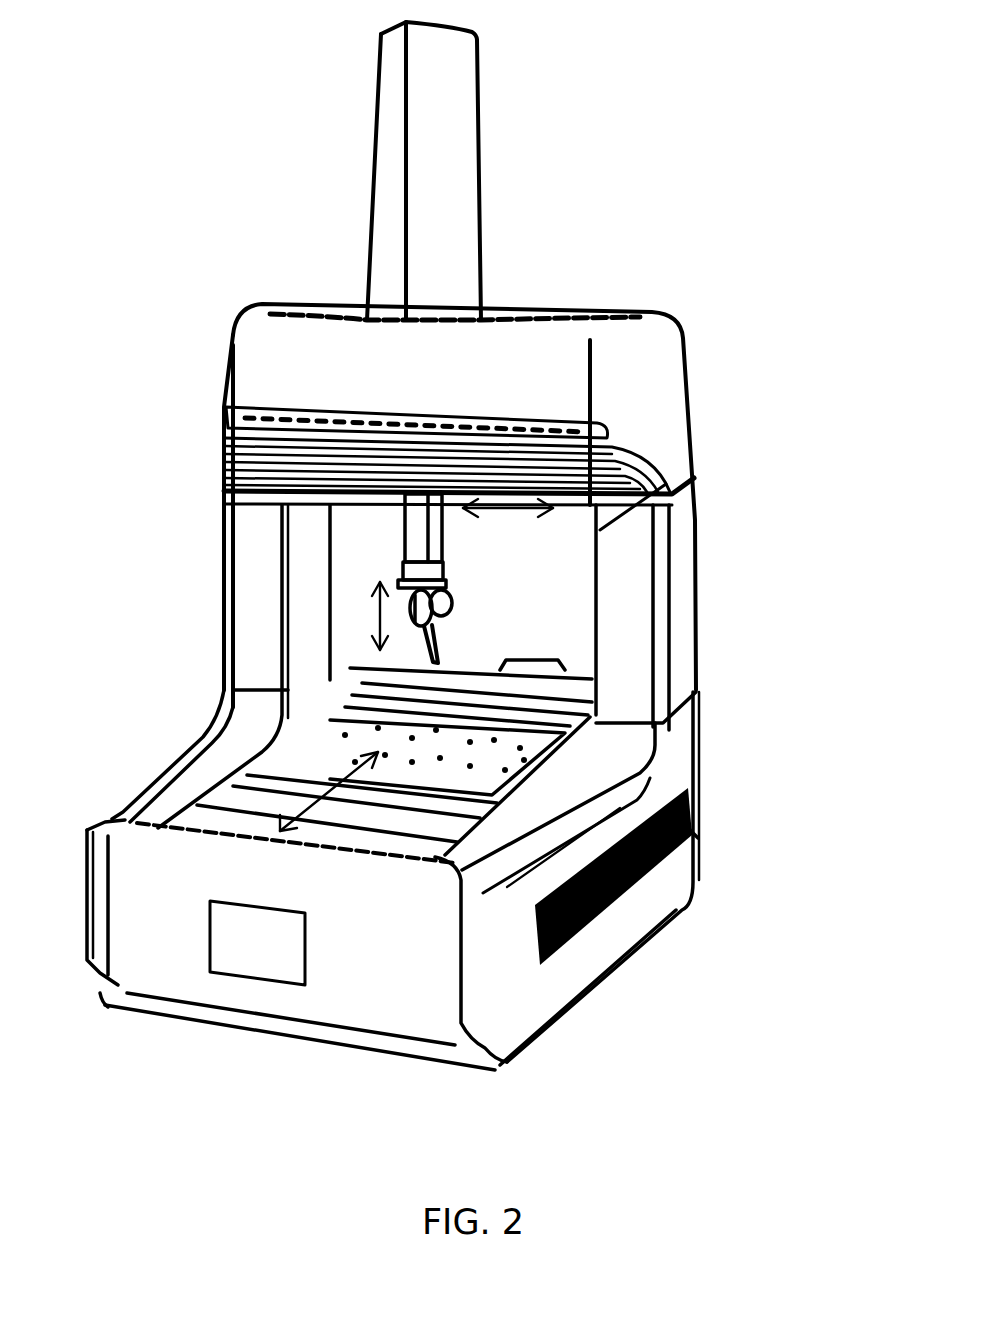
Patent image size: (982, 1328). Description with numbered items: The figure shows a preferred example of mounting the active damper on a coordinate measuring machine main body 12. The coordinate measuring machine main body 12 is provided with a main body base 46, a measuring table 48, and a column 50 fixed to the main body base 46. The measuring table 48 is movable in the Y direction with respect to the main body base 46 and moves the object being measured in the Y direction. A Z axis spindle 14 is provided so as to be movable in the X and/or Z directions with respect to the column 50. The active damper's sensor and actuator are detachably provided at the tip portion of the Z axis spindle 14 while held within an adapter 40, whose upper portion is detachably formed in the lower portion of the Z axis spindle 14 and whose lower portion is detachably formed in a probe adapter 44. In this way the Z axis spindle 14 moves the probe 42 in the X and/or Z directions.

The coordinate measuring machine main body 12 is at (659, 158).
The Z axis spindle 14 is at (444, 534).
The adapter 40 is at (440, 572).
The probe 42 is at (448, 647).
The probe adapter 44 is at (447, 590).
The main body base 46 is at (390, 949).
The measuring table 48 is at (357, 728).
The column 50 is at (245, 345).